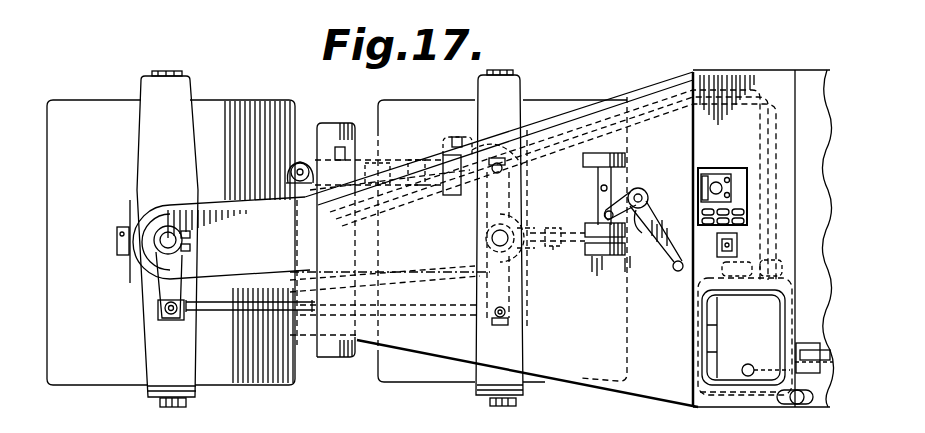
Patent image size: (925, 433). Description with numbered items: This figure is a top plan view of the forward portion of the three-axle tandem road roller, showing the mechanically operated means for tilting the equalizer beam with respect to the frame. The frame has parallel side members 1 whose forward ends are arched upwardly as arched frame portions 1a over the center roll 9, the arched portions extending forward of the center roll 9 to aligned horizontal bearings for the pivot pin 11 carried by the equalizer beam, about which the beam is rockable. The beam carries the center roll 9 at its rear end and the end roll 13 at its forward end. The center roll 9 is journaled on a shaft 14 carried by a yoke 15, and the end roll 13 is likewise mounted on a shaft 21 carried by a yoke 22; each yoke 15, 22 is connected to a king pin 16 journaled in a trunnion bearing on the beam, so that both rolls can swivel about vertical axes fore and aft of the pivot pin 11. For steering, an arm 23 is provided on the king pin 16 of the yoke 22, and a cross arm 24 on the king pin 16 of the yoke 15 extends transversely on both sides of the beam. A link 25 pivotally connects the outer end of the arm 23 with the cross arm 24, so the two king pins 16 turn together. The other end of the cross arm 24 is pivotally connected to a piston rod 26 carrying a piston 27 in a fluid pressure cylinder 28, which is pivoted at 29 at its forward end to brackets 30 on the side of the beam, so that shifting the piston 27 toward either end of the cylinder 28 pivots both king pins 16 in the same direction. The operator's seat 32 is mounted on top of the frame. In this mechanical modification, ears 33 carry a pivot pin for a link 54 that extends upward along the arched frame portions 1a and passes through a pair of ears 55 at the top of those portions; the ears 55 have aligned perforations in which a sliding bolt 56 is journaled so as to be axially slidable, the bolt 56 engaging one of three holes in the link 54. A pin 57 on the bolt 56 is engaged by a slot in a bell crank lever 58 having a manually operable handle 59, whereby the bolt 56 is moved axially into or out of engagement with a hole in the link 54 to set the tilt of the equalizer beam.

The side member 1 is at (770, 72).
The arched frame portion 1a is at (566, 130).
The center roll 9 is at (415, 378).
The pivot pin 11 is at (338, 126).
The end roll 13 is at (282, 84).
The shaft 14 is at (498, 406).
The yoke 15 is at (524, 392).
The king pin 16 is at (490, 240).
The shaft 21 is at (178, 408).
The yoke 22 is at (155, 391).
The arm 23 is at (163, 285).
The cross arm 24 is at (504, 292).
The link 25 is at (250, 300).
The piston rod 26 is at (492, 156).
The piston 27 is at (386, 196).
The fluid pressure cylinder 28 is at (416, 130).
The pivot 29 is at (302, 163).
The bracket 30 is at (290, 183).
The operator's seat 32 is at (735, 358).
The ear 33 is at (554, 250).
The link 54 is at (558, 228).
The ear 55 is at (596, 210).
The sliding bolt 56 is at (614, 174).
The pin 57 is at (590, 153).
The bell crank lever 58 is at (641, 230).
The handle 59 is at (651, 218).